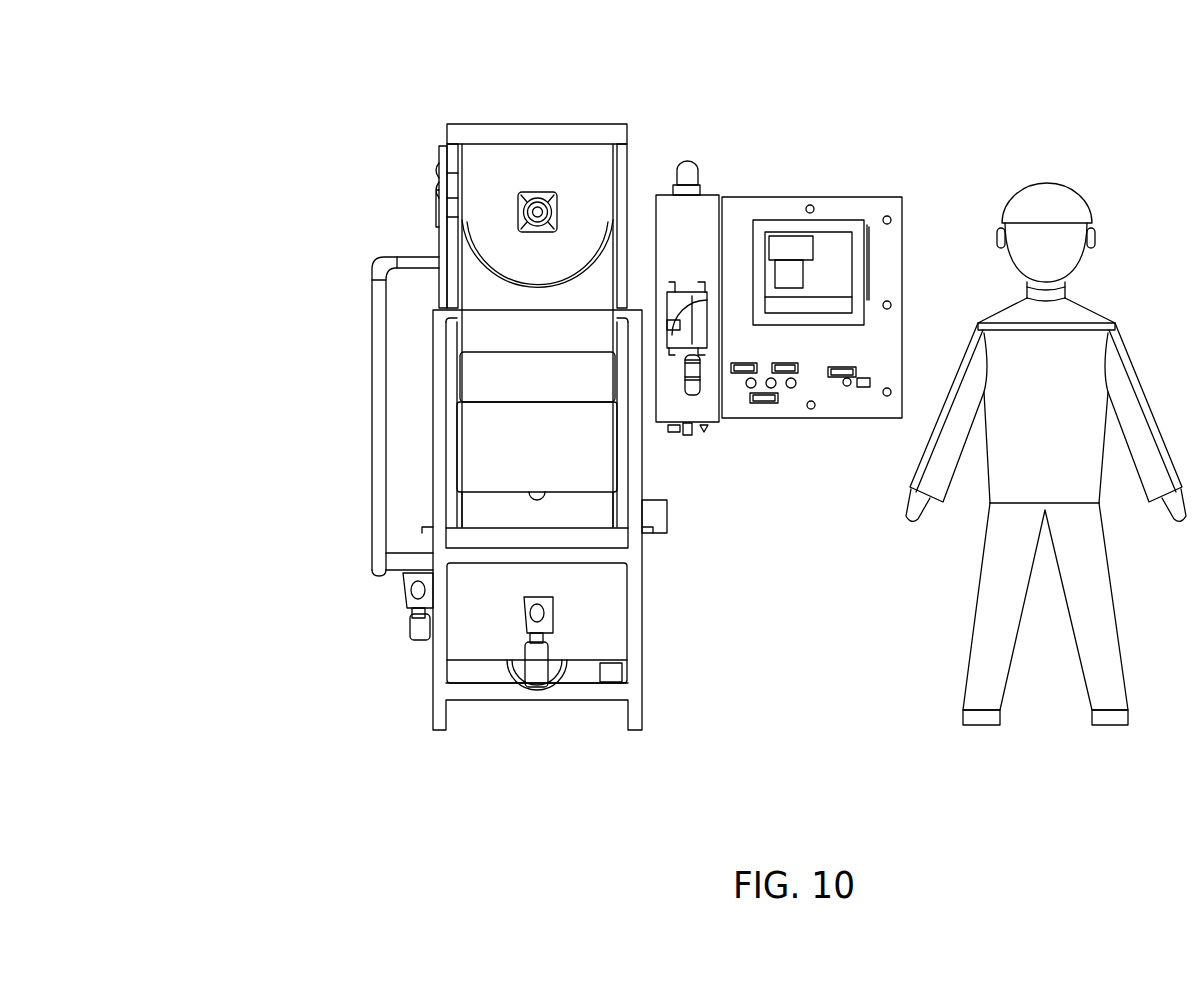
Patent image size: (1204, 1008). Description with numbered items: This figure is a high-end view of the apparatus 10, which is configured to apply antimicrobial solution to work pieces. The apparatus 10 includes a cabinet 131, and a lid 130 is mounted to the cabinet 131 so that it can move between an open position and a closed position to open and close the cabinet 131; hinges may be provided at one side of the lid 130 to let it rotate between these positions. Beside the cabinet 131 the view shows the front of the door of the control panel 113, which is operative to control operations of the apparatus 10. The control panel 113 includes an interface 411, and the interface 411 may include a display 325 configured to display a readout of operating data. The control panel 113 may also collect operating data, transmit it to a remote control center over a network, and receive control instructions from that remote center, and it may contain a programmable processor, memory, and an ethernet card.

The apparatus 10 is at (323, 68).
The lid 130 is at (455, 135).
The cabinet 131 is at (617, 150).
The control panel 113 is at (860, 207).
The display 325 is at (790, 243).
The interface 411 is at (830, 277).